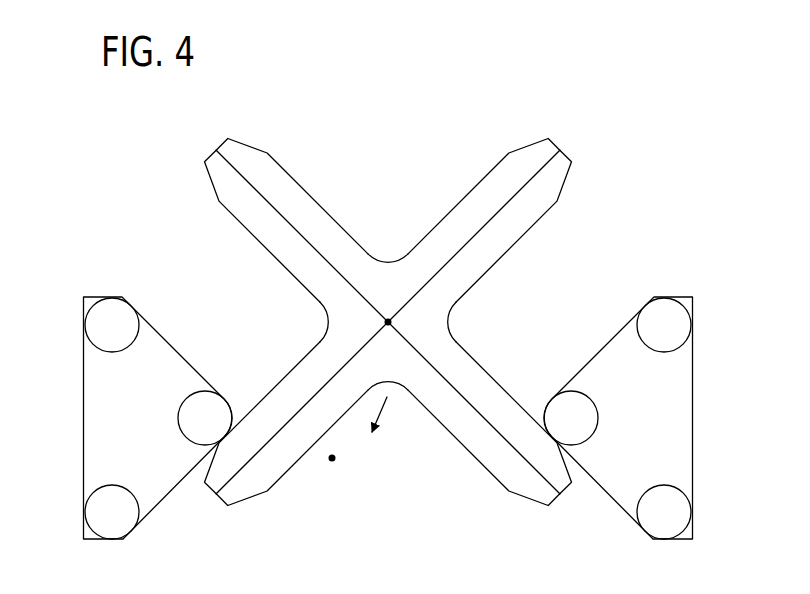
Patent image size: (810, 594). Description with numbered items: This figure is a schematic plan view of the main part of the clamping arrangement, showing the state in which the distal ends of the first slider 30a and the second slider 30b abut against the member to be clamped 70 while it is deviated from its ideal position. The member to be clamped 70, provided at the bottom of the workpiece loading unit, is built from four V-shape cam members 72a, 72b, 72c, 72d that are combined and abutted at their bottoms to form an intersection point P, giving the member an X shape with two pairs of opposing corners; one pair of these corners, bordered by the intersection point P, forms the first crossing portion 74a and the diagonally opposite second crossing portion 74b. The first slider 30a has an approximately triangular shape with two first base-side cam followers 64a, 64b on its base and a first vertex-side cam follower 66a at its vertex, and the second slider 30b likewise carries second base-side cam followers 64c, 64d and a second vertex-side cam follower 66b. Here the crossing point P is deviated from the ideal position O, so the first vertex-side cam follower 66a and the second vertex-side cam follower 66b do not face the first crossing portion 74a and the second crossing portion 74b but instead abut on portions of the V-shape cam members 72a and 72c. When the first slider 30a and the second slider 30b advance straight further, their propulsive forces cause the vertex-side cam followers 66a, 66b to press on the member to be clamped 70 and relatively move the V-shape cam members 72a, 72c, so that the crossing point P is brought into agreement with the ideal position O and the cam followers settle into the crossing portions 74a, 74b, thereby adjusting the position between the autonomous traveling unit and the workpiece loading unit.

The member to be clamped 70 is at (533, 152).
The V-shape cam member 72a is at (239, 205).
The V-shape cam member 72b is at (277, 162).
The V-shape cam member 72c is at (540, 205).
The V-shape cam member 72d is at (497, 483).
The first crossing portion 74a is at (325, 319).
The second crossing portion 74b is at (451, 317).
The first slider 30a is at (104, 408).
The second slider 30b is at (675, 412).
The first base-side cam follower 64a is at (103, 327).
The first base-side cam follower 64b is at (106, 510).
The second base-side cam follower 64c is at (673, 515).
The second base-side cam follower 64d is at (673, 328).
The first vertex-side cam follower 66a is at (192, 423).
The second vertex-side cam follower 66b is at (583, 423).
The intersection point P is at (388, 318).
The ideal position O is at (338, 458).